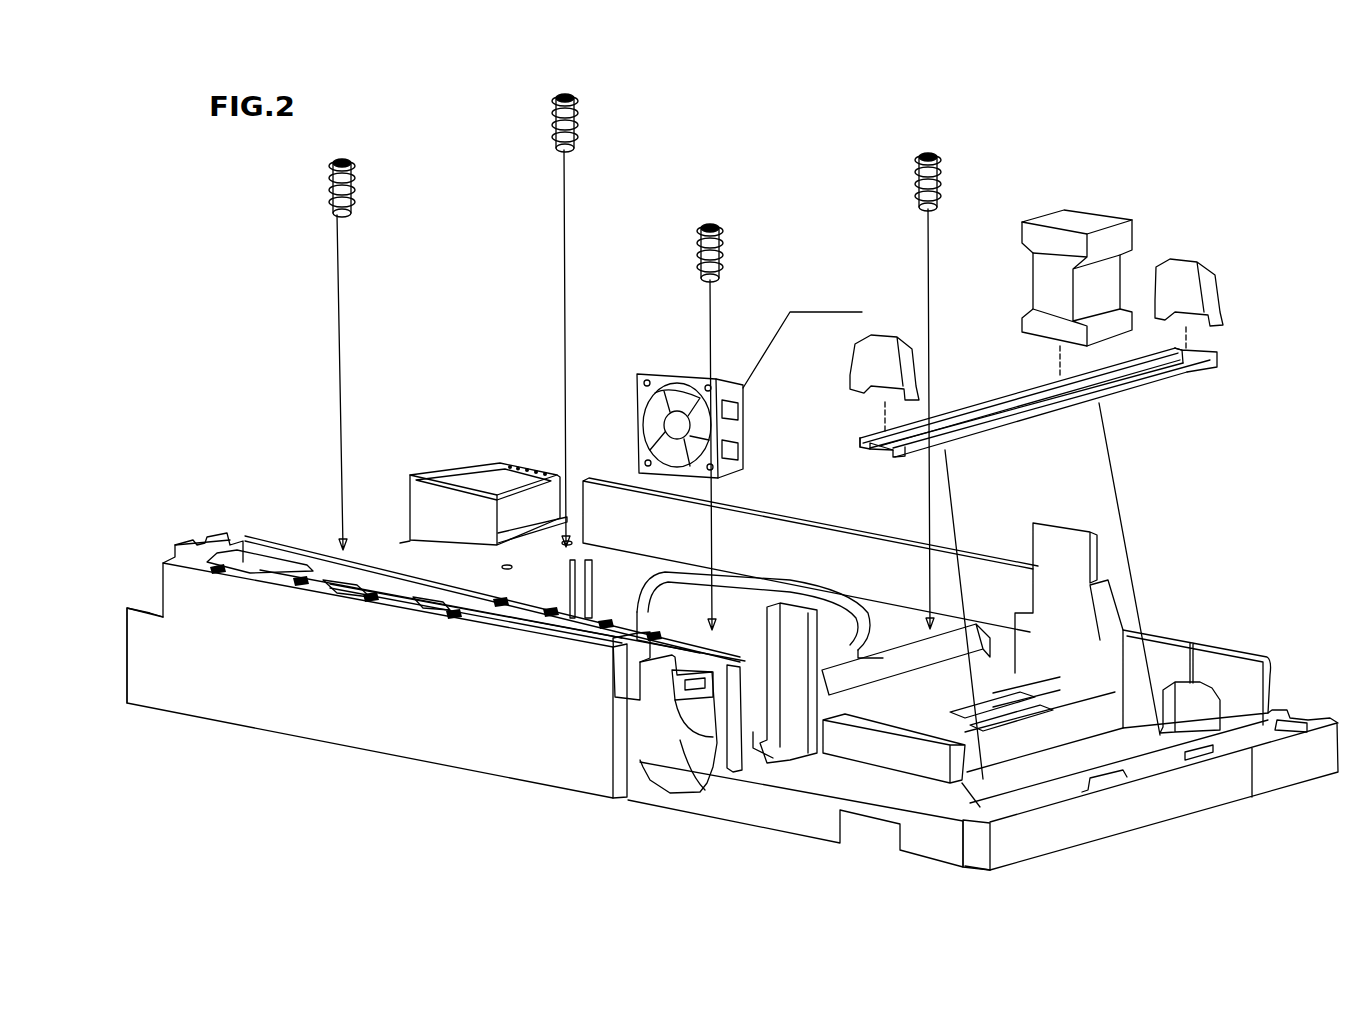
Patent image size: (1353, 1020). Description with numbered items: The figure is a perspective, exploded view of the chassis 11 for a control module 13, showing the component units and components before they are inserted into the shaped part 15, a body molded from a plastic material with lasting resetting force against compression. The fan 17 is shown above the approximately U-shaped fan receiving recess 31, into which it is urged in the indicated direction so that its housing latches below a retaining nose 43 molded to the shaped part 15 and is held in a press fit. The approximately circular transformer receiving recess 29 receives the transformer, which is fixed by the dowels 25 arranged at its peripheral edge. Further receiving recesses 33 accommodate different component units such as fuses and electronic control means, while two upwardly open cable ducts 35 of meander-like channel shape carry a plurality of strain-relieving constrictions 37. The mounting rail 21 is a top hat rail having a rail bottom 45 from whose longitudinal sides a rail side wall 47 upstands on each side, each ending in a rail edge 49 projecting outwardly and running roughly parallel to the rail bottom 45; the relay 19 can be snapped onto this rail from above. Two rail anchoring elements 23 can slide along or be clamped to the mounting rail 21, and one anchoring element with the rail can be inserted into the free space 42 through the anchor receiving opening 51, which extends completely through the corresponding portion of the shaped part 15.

The chassis 11 is at (152, 578).
The control module 13 is at (1236, 582).
The shaped part 15 is at (473, 750).
The fan 17 is at (655, 376).
The relay 19 is at (1080, 208).
The mounting rail 21 is at (1218, 352).
The rail anchoring elements 23 is at (1200, 292).
The dowels 25 is at (567, 95).
The transformer receiving recess 29 is at (827, 622).
The fan receiving recess 31 is at (648, 772).
The receiving recesses 33 is at (247, 562).
The cable ducts 35 is at (1030, 700).
The strain-relieving constrictions 37 is at (1097, 780).
The free space 42 is at (1040, 777).
The retaining nose 43 is at (707, 792).
The rail bottom 45 is at (866, 450).
The rail side wall 47 is at (860, 440).
The rail edge 49 is at (995, 403).
The anchor receiving opening 51 is at (1200, 710).